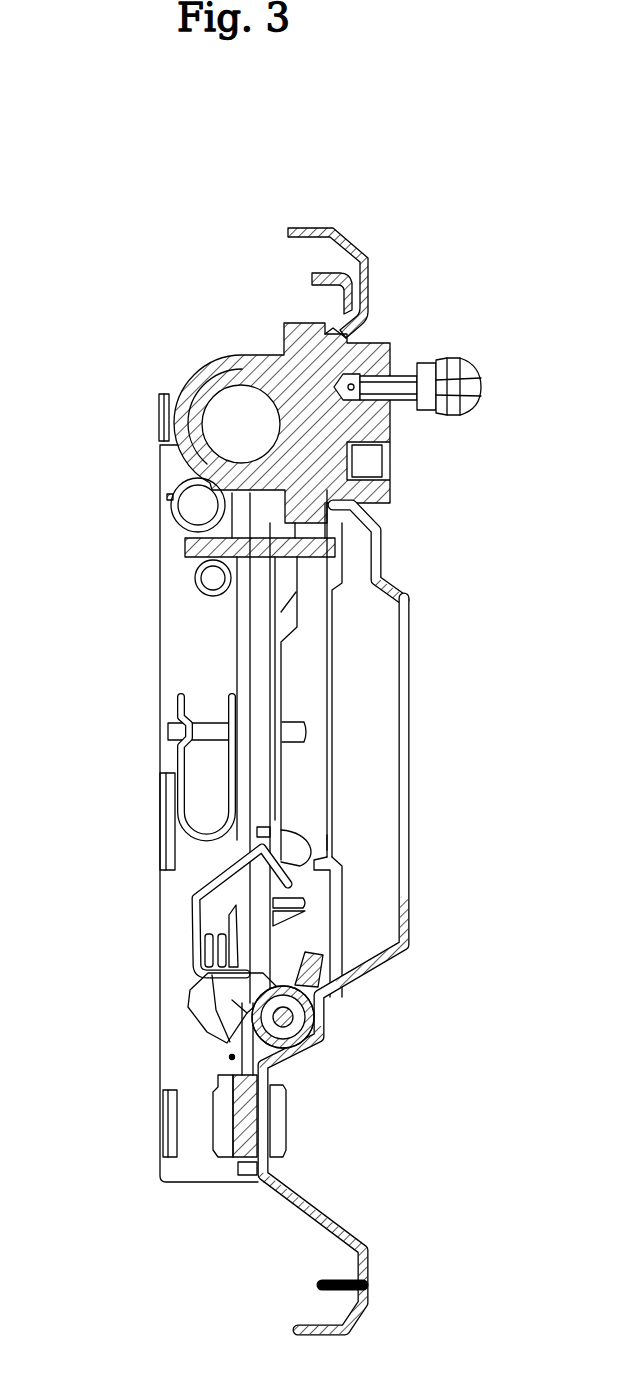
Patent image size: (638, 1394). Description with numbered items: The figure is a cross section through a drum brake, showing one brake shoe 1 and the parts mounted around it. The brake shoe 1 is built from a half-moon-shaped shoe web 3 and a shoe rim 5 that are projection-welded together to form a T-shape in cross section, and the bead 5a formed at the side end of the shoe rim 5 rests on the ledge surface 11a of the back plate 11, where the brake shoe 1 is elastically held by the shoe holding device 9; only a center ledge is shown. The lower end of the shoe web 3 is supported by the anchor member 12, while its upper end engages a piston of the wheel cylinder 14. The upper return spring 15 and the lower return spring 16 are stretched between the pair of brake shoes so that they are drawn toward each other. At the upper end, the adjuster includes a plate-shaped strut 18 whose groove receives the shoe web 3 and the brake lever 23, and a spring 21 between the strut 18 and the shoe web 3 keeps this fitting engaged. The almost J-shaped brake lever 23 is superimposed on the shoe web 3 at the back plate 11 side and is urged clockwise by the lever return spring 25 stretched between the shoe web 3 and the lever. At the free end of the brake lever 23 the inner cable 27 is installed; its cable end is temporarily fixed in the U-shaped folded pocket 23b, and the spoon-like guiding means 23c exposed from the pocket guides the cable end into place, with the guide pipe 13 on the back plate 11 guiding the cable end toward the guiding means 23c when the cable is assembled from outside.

The brake shoe 1 is at (152, 698).
The shoe web 3 is at (238, 645).
The shoe rim 5 is at (170, 673).
The bead 5a is at (160, 418).
The shoe holding device 9 is at (165, 745).
The back plate 11 is at (418, 600).
The ledge surface 11a is at (318, 842).
The anchor member 12 is at (250, 1127).
The guide pipe 13 is at (208, 997).
The wheel cylinder 14 is at (401, 340).
The upper return spring 15 is at (171, 512).
The lower return spring 16 is at (229, 1057).
The strut 18 is at (338, 543).
The spring 21 is at (196, 578).
The brake lever 23 is at (267, 678).
The U-shaped folded pocket 23b is at (295, 980).
The guiding means 23c is at (215, 1012).
The lever return spring 25 is at (197, 930).
The inner cable 27 is at (295, 1020).